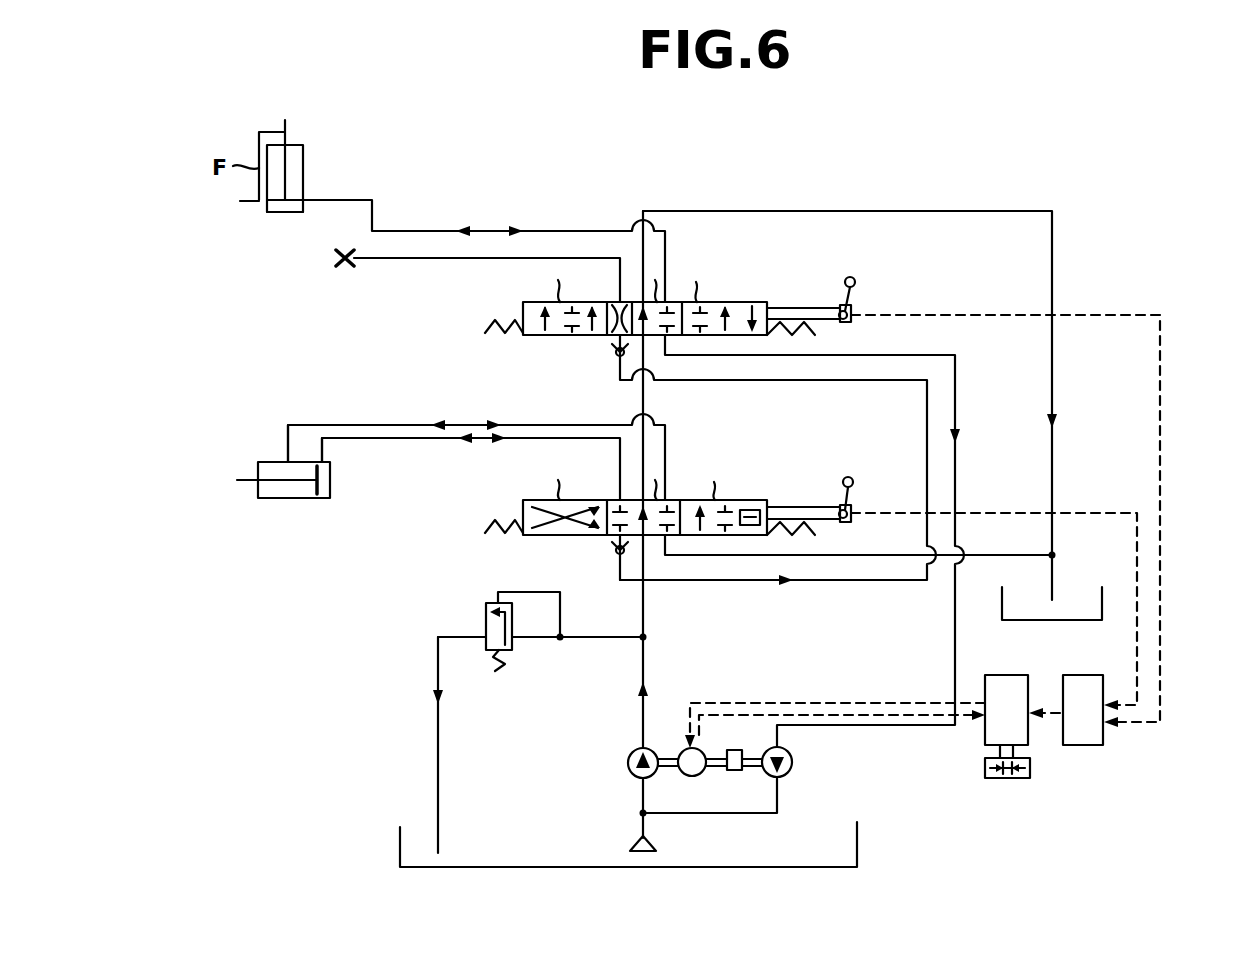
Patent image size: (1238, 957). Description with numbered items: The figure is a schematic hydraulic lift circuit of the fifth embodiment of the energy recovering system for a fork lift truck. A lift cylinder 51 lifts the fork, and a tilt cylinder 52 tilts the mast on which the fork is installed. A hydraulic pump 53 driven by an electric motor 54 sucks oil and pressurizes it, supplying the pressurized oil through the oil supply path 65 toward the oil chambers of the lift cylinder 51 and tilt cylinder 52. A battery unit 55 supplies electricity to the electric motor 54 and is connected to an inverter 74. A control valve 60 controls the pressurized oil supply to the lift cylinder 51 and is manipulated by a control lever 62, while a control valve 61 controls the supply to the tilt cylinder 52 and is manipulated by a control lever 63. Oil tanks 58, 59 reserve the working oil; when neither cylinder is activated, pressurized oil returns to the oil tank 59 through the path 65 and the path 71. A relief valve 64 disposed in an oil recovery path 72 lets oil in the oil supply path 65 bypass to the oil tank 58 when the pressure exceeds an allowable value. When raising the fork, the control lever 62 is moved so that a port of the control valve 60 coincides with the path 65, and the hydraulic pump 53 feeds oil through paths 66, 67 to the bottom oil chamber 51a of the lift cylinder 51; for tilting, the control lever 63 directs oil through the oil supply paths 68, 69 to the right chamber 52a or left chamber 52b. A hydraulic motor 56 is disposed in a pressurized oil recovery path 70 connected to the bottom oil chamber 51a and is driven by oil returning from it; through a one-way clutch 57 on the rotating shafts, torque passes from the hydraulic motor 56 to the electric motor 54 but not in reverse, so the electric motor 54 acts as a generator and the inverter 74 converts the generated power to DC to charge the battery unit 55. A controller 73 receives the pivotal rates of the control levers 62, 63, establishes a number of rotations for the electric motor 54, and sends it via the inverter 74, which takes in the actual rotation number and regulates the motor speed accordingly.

The lift cylinder 51 is at (303, 145).
The bottom oil chamber 51a is at (278, 212).
The tilt cylinder 52 is at (268, 498).
The right chamber 52a is at (322, 468).
The left chamber 52b is at (268, 462).
The hydraulic pump 53 is at (628, 768).
The electric motor 54 is at (683, 738).
The battery unit 55 is at (1003, 786).
The hydraulic motor 56 is at (795, 757).
The one-way clutch 57 is at (738, 770).
The oil tank 58 is at (400, 845).
The oil tank 59 is at (1102, 600).
The control valve 60 is at (748, 302).
The control valve 61 is at (742, 500).
The control lever 62 is at (855, 283).
The control lever 63 is at (853, 483).
The relief valve 64 is at (486, 622).
The oil supply path 65 is at (645, 608).
The path 66 is at (857, 577).
The path 67 is at (481, 231).
The oil supply path 68 is at (380, 425).
The oil supply path 69 is at (437, 441).
The pressurized oil recovery path 70 is at (865, 355).
The path 71 is at (1052, 230).
The oil recovery path 72 is at (438, 737).
The controller 73 is at (1080, 745).
The inverter 74 is at (1028, 735).